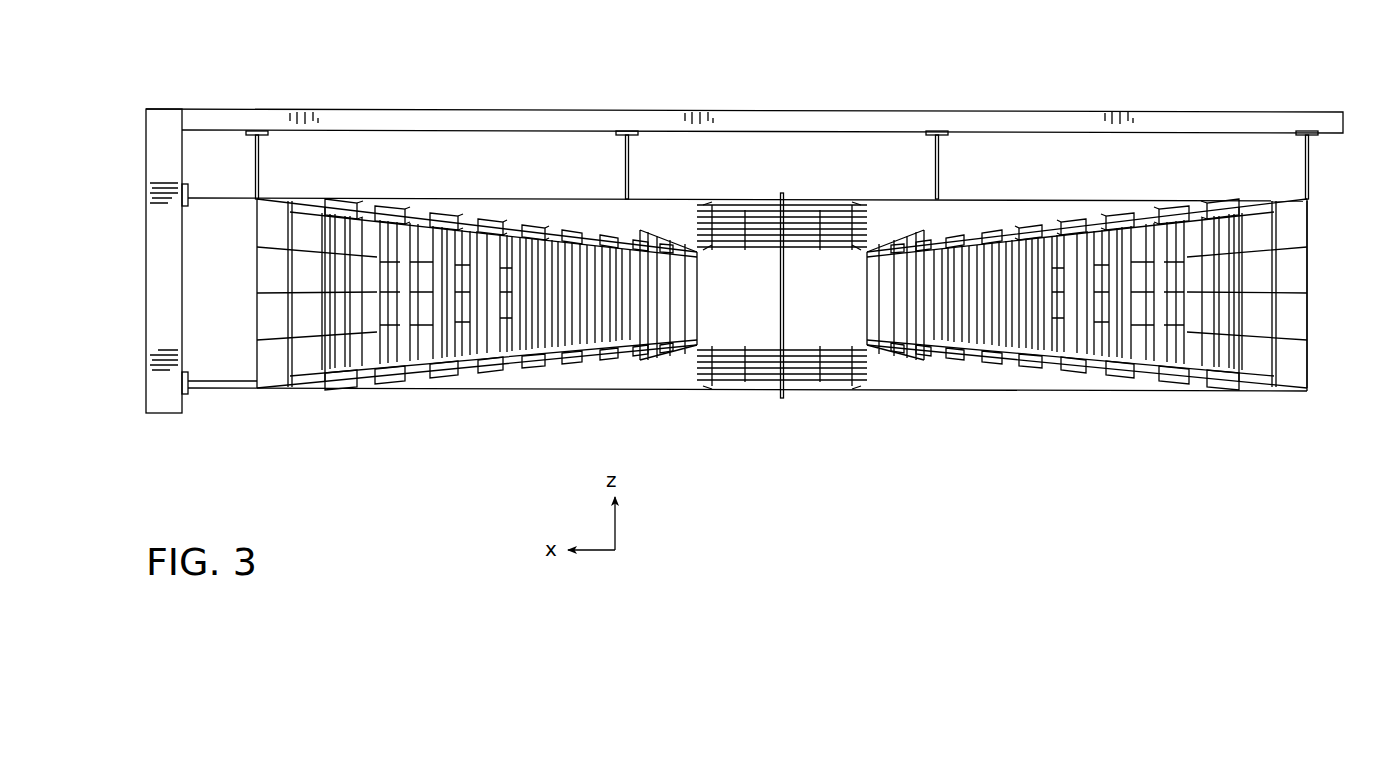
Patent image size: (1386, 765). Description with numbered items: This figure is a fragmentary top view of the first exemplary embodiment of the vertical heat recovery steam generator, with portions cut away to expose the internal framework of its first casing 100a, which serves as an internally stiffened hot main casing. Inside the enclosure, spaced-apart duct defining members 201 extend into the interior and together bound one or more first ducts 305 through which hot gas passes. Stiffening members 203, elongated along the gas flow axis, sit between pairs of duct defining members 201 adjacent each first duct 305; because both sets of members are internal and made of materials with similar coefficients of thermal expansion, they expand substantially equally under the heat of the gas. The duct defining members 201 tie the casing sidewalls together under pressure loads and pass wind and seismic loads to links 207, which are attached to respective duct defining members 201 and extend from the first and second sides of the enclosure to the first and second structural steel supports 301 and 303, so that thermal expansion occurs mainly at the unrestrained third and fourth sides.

The first casing 100a is at (388, 470).
The duct defining member 201 is at (895, 298).
The stiffening member 203 is at (388, 207).
The link 207 is at (237, 197).
The first structural steel support 301 is at (1078, 111).
The second structural steel support 303 is at (183, 410).
The first duct 305 is at (418, 320).